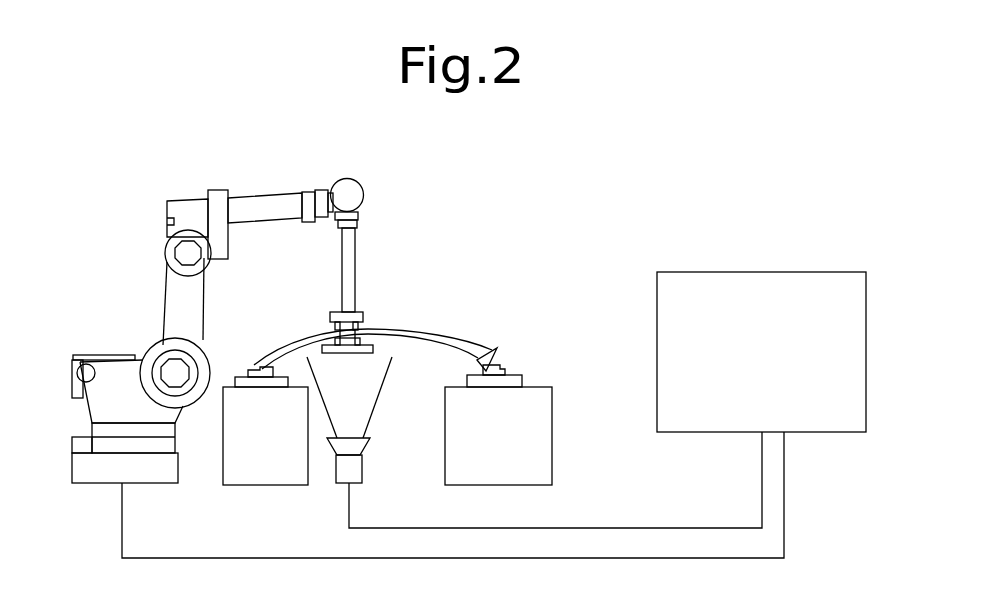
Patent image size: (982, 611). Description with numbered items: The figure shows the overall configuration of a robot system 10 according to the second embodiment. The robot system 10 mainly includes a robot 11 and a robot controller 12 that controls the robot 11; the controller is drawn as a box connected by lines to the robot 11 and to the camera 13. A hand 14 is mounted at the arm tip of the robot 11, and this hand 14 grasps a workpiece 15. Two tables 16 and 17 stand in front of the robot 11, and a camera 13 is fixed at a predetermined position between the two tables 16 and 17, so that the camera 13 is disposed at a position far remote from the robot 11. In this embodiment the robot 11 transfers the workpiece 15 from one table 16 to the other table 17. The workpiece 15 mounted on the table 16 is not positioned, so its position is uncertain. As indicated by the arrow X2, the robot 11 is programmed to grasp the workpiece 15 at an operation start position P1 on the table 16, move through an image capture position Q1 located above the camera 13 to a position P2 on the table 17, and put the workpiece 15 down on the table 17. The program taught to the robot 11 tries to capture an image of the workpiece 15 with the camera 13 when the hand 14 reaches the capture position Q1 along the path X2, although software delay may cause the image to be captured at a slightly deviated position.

The robot system 10 is at (626, 159).
The robot 11 is at (109, 339).
The robot controller 12 is at (806, 270).
The camera 13 is at (338, 470).
The hand 14 is at (365, 327).
The workpiece 15 is at (372, 347).
The table 16 is at (255, 473).
The table 17 is at (545, 460).
The operation start position P1 is at (257, 358).
The position on table P2 is at (500, 349).
The image capture position Q1 is at (340, 328).
The arrow X2 is at (452, 330).